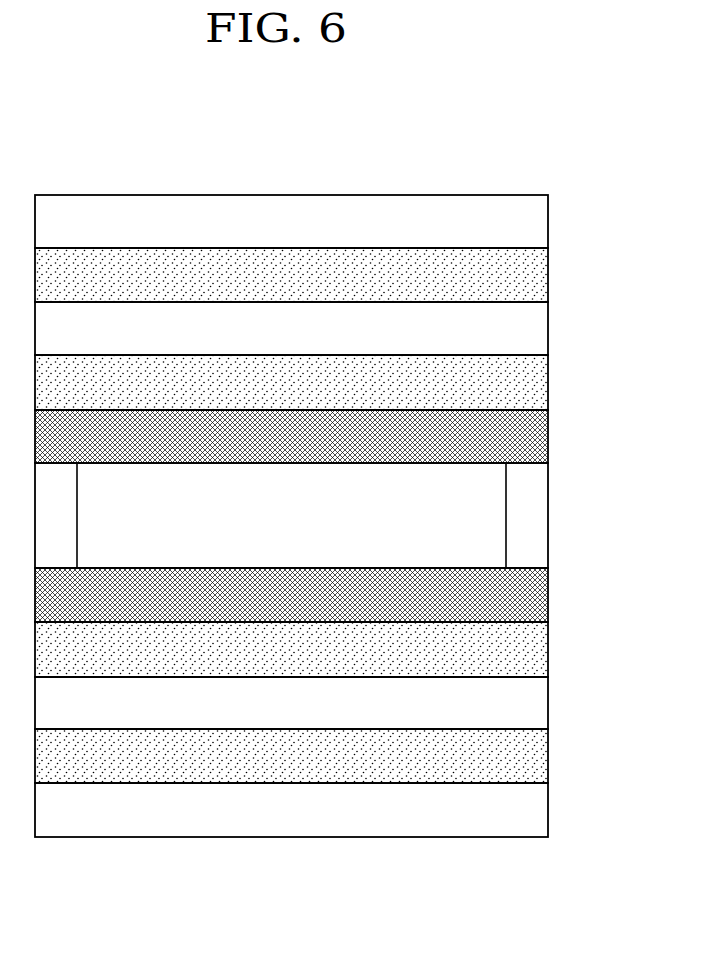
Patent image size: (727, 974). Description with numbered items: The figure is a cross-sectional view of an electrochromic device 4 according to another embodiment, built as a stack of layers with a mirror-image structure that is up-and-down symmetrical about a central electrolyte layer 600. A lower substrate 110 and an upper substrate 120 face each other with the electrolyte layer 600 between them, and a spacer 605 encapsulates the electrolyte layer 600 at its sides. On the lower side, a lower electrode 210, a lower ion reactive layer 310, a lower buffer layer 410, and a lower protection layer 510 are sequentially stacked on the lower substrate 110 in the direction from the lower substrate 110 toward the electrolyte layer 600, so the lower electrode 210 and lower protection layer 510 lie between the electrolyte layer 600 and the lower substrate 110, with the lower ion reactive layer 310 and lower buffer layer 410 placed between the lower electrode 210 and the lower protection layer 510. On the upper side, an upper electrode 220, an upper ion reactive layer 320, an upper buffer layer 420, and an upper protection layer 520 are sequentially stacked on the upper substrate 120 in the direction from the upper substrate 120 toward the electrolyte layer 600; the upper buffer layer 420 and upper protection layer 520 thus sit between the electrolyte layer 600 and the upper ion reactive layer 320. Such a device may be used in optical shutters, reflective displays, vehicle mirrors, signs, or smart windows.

The electrochromic device 4 is at (285, 161).
The upper substrate 120 is at (541, 222).
The upper electrode 220 is at (541, 275).
The upper ion reactive layer 320 is at (541, 328).
The upper buffer layer 420 is at (541, 382).
The upper protection layer 520 is at (541, 436).
The electrolyte layer 600 is at (483, 533).
The spacer 605 is at (541, 502).
The lower protection layer 510 is at (541, 595).
The lower buffer layer 410 is at (541, 650).
The lower ion reactive layer 310 is at (541, 703).
The lower electrode 210 is at (541, 756).
The lower substrate 110 is at (541, 810).